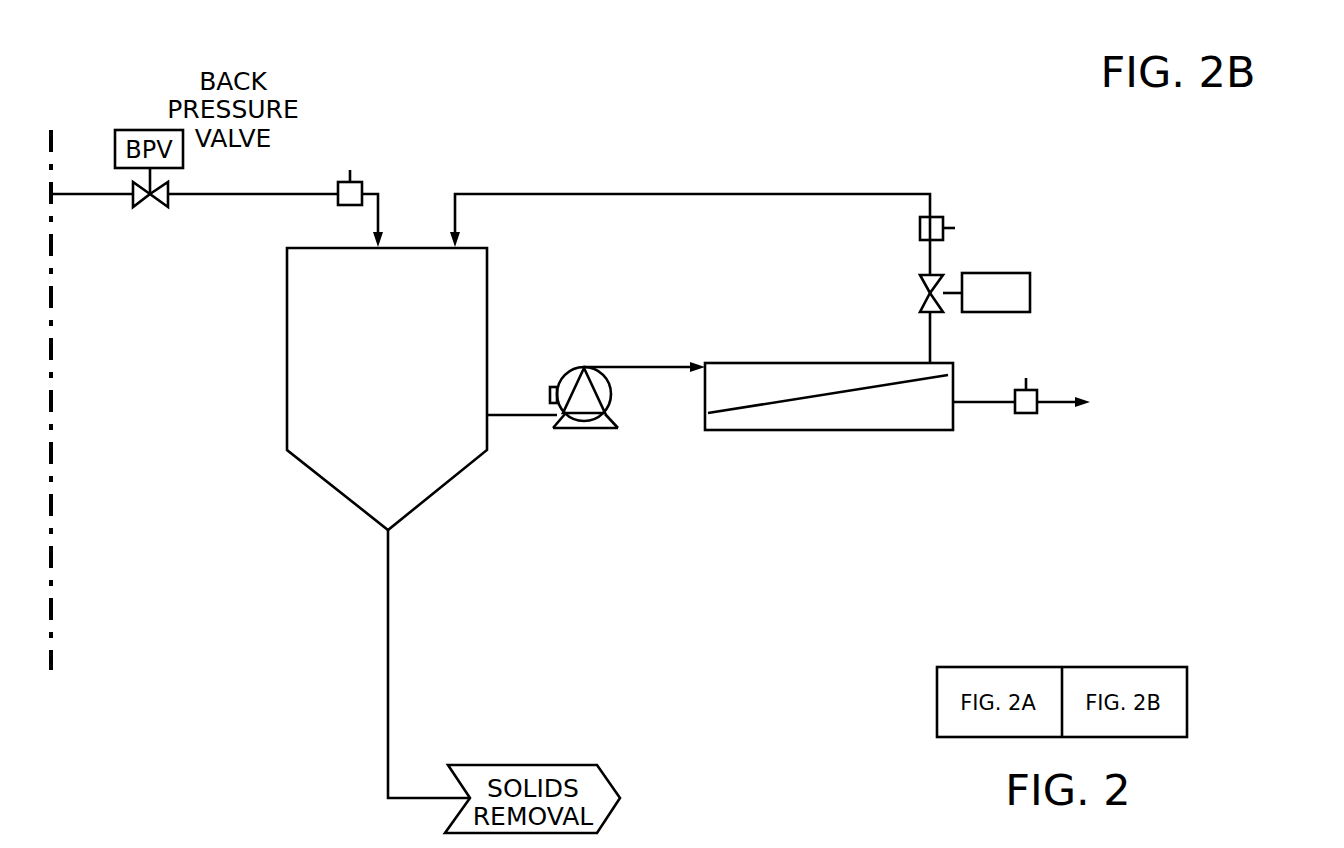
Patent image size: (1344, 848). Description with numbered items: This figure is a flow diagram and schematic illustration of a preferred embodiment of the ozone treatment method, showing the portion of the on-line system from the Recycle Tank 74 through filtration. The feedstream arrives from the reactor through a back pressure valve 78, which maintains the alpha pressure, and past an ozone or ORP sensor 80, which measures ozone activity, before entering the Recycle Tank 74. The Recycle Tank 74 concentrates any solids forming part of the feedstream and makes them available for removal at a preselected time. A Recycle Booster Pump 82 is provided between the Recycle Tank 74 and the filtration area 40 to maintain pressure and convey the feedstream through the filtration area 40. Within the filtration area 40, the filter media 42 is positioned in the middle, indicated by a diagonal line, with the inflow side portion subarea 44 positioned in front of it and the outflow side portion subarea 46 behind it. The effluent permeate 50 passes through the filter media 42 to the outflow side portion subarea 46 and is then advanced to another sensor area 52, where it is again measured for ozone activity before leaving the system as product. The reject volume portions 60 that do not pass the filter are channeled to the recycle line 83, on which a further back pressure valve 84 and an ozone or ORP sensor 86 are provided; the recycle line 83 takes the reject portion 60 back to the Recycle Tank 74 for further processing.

The filtration area 40 is at (791, 334).
The filter media 42 is at (845, 395).
The inflow side portion subarea 44 is at (742, 383).
The outflow side portion subarea 46 is at (952, 387).
The effluent permeate portion volume 50 is at (969, 425).
The sensor area 52 is at (1058, 386).
The reject volume portions 60 is at (850, 302).
The Recycle Tank 74 is at (354, 464).
The back pressure valve 78 is at (118, 183).
The ozone or ORP sensor 80 is at (312, 210).
The Recycle Booster Pump 82 is at (568, 443).
The recycle line 83 is at (930, 333).
The back pressure valve 84 is at (992, 319).
The ozone or ORP sensor 86 is at (960, 197).